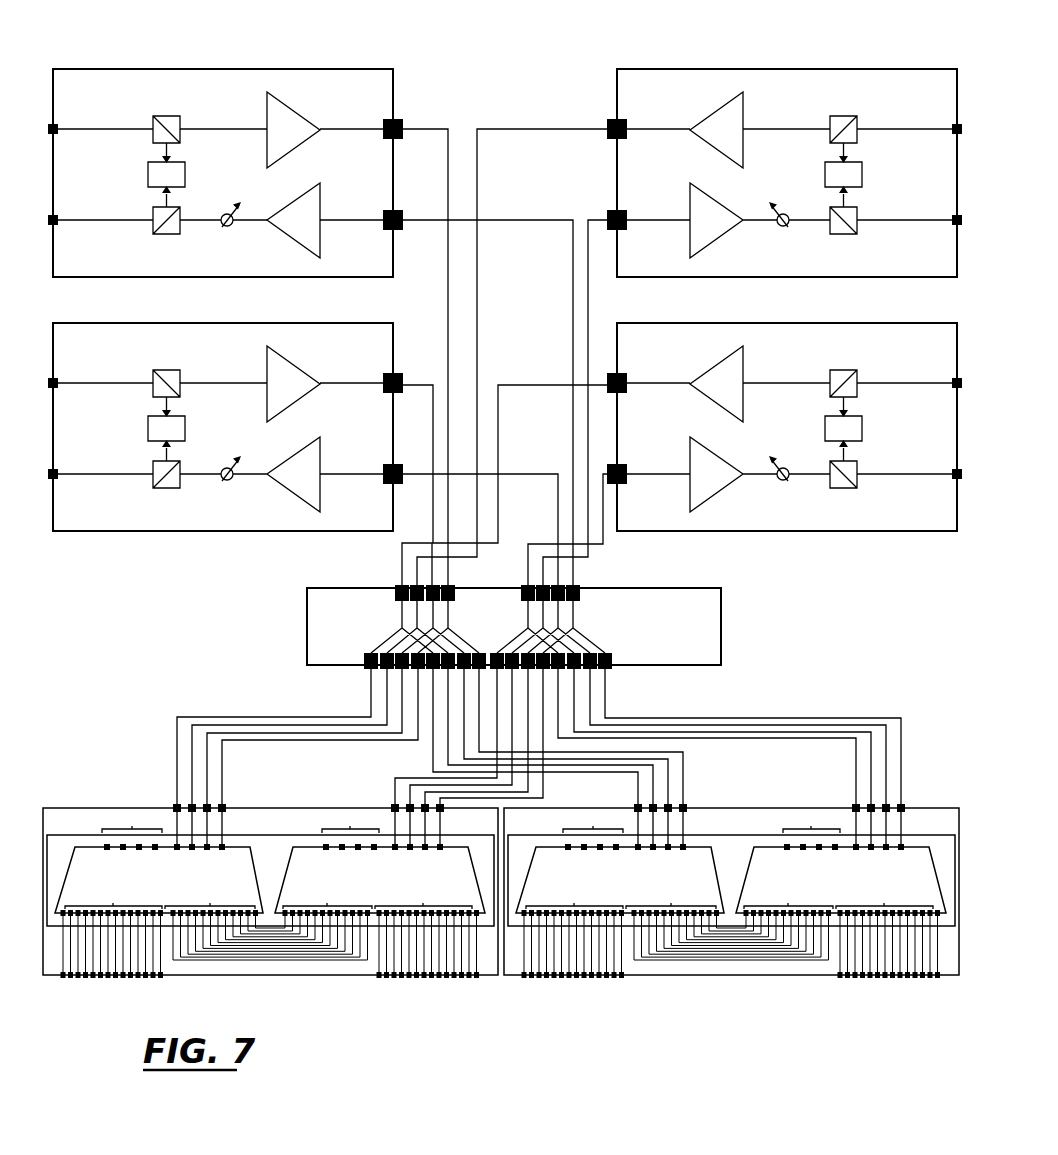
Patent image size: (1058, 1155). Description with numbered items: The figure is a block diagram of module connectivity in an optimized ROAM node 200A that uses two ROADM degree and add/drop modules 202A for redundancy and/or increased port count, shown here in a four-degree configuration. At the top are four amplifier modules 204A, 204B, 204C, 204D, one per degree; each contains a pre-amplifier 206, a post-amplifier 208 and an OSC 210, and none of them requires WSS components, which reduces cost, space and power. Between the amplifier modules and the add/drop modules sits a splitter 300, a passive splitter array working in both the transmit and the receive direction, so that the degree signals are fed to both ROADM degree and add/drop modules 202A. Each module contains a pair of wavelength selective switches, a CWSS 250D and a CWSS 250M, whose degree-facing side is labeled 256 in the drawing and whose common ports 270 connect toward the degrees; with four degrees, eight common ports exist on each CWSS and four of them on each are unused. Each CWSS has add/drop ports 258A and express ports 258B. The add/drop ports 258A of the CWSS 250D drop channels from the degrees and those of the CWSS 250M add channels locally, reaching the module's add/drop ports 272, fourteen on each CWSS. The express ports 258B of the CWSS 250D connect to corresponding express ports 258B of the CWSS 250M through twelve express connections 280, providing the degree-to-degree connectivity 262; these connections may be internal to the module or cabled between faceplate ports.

The optimized ROAM node 200A is at (512, 15).
The amplifier module 204A is at (78, 68).
The amplifier module 204B is at (78, 322).
The amplifier module 204C is at (863, 68).
The amplifier module 204D is at (863, 322).
The pre-amplifier 206 is at (302, 115).
The post-amplifier 208 is at (320, 197).
The OSC 210 is at (183, 175).
The splitter 300 is at (721, 620).
The ROADM degree and add/drop module 202A is at (290, 808).
The common ports 270 is at (249, 824).
The WSS common/input ports 256 is at (160, 864).
The CWSS 250D is at (158, 887).
The CWSS 250M is at (381, 887).
The add/drop ports 258A is at (270, 901).
The express ports 258B is at (268, 901).
The add/drop ports 272 is at (173, 993).
The degree-to-degree connectivity 262 is at (267, 993).
The express connections 280 is at (327, 973).